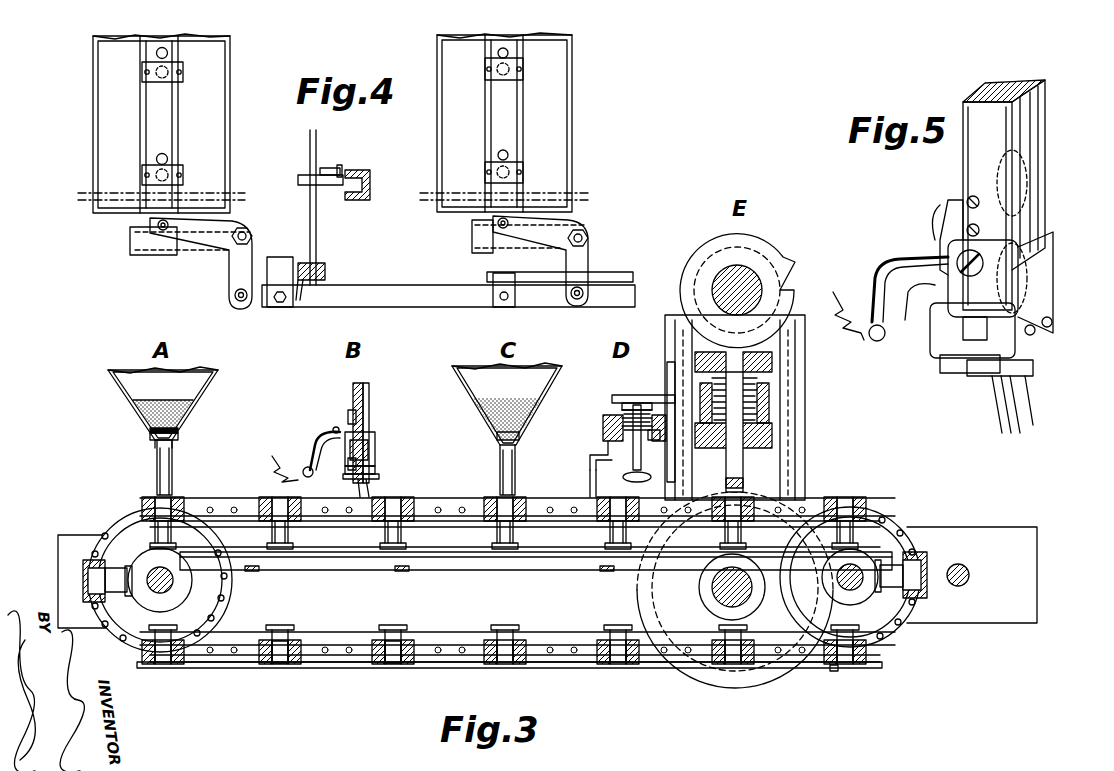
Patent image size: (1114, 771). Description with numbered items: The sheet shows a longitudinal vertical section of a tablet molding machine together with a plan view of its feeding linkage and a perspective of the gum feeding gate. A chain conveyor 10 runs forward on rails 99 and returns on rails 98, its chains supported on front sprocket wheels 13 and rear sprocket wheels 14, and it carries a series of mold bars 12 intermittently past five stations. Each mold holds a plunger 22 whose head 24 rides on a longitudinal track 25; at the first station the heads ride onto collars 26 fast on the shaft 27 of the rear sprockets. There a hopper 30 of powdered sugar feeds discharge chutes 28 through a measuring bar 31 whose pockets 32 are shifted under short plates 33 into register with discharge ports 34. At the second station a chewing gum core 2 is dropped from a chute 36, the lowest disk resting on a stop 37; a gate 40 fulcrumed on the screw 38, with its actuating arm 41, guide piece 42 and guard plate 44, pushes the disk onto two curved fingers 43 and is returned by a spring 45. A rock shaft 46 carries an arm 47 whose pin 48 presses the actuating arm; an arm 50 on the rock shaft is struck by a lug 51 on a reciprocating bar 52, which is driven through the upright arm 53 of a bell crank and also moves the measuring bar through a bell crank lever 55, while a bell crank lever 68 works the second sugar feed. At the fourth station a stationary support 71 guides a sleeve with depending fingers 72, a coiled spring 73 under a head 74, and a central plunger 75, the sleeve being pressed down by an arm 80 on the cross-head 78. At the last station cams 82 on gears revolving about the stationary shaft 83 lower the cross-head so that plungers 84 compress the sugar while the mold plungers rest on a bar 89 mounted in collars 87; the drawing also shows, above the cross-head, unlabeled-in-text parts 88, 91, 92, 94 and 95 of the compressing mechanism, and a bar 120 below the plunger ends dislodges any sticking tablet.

In FIG. 5, the chewing gum core 2 is at (1030, 288).
In FIG. 3, the chewing gum core 2 is at (360, 420).
In FIG. 3, the chain conveyor 10 is at (228, 668).
In FIG. 3, the mold bar 12 is at (262, 503).
In FIG. 3, the sprocket wheel 13 is at (898, 520).
In FIG. 3, the sprocket wheel 14 is at (140, 548).
In FIG. 3, the plunger 22 is at (276, 664).
In FIG. 3, the head 24 is at (125, 558).
In FIG. 3, the track or rail 25 is at (272, 560).
In FIG. 3, the collar 26 is at (148, 600).
In FIG. 3, the shaft 27 is at (173, 586).
In FIG. 3, the discharge chute 28 is at (172, 470).
In FIG. 4, the hopper 30 is at (96, 98).
In FIG. 3, the hopper 30 is at (115, 384).
In FIG. 4, the bar 31 is at (165, 110).
In FIG. 3, the bar 31 is at (152, 444).
In FIG. 4, the pocket 32 is at (168, 52).
In FIG. 3, the pocket 32 is at (180, 428).
In FIG. 4, the plate 33 is at (144, 65).
In FIG. 3, the plate 33 is at (140, 426).
In FIG. 4, the discharge port 34 is at (155, 85).
In FIG. 3, the discharge port 34 is at (180, 437).
In FIG. 5, the chute 36 is at (975, 98).
In FIG. 3, the chute 36 is at (353, 386).
In FIG. 5, the stop 37 is at (1036, 370).
In FIG. 3, the stop 37 is at (352, 480).
In FIG. 5, the screw 38 is at (957, 256).
In FIG. 4, the gate 40 is at (372, 180).
In FIG. 5, the gate 40 is at (1055, 300).
In FIG. 3, the gate 40 is at (376, 448).
In FIG. 4, the actuating arm 41 is at (332, 168).
In FIG. 5, the actuating arm 41 is at (880, 270).
In FIG. 3, the actuating arm 41 is at (315, 440).
In FIG. 5, the guide piece 42 is at (945, 362).
In FIG. 5, the curved finger 43 is at (1012, 430).
In FIG. 3, the curved finger 43 is at (370, 490).
In FIG. 5, the guard plate 44 is at (963, 330).
In FIG. 3, the guard plate 44 is at (348, 472).
In FIG. 5, the spring 45 is at (858, 335).
In FIG. 3, the spring 45 is at (276, 470).
In FIG. 4, the rock shaft 46 is at (318, 236).
In FIG. 4, the arm 47 is at (326, 185).
In FIG. 4, the pin 48 is at (342, 168).
In FIG. 3, the pin 48 is at (336, 426).
In FIG. 4, the arm 50 is at (298, 302).
In FIG. 4, the block or lug 51 is at (280, 258).
In FIG. 4, the bar 52 is at (386, 292).
In FIG. 4, the upright arm 53 is at (508, 276).
In FIG. 4, the bell crank lever 55 is at (230, 270).
In FIG. 4, the bell crank lever 68 is at (588, 252).
In FIG. 3, the stationary support 71 is at (604, 436).
In FIG. 3, the finger 72 is at (651, 470).
In FIG. 3, the coiled spring 73 is at (655, 438).
In FIG. 3, the head 74 is at (622, 416).
In FIG. 3, the plunger 75 is at (592, 470).
In FIG. 3, the cross-head 78 is at (660, 399).
In FIG. 3, the arm 80 is at (622, 406).
In FIG. 3, the cam 82 is at (690, 676).
In FIG. 3, the stationary shaft 83 is at (652, 588).
In FIG. 3, the plunger 84 is at (745, 470).
In FIG. 3, the collar 87 is at (702, 600).
In FIG. 3, the spring housing 88 is at (766, 412).
In FIG. 3, the bar 89 is at (712, 580).
In FIG. 3, the press spring 91 is at (760, 386).
In FIG. 3, the press frame 92 is at (700, 362).
In FIG. 3, the cam shaft 94 is at (742, 270).
In FIG. 3, the cam 95 is at (695, 248).
In FIG. 3, the rail 98 is at (568, 662).
In FIG. 3, the rail 99 is at (325, 523).
In FIG. 3, the bar 120 is at (834, 672).